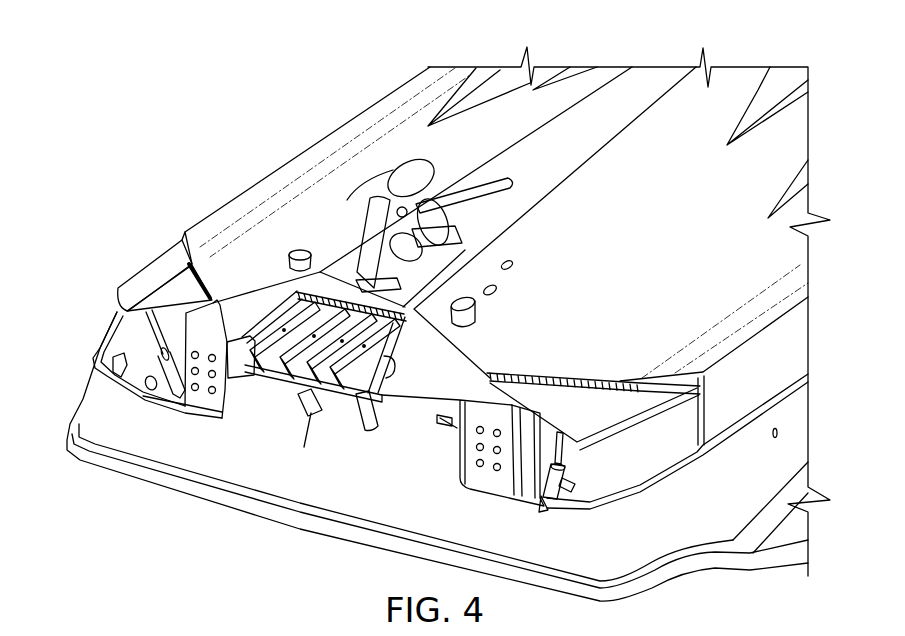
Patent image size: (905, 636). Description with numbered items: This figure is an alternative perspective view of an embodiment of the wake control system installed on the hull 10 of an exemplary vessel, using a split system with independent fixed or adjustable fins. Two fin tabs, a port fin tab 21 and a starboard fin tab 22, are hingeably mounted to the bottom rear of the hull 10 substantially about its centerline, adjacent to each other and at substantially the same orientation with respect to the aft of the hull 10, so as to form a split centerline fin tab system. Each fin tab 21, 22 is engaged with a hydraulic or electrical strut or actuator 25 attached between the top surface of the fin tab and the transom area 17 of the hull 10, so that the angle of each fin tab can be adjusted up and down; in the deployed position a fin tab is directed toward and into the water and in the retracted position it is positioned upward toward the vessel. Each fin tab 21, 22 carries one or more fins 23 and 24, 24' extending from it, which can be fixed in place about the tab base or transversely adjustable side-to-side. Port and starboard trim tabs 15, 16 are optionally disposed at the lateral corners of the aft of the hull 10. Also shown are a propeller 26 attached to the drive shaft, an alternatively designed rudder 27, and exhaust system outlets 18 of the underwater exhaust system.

The hull 10 is at (680, 160).
The port trim tab 15 is at (583, 397).
The starboard trim tab 16 is at (158, 292).
The transom area 17 is at (393, 491).
The exhaust system outlets 18 is at (290, 252).
The port fin tab 21 is at (395, 355).
The starboard fin tab 22 is at (280, 378).
The fixed fin 23 is at (372, 427).
The fixed fin 24 is at (327, 321).
The fixed fin 24' is at (302, 318).
The hydraulic or electrical strut or actuator 25 is at (352, 427).
The propeller 26 is at (413, 180).
The rudder 27 is at (378, 244).